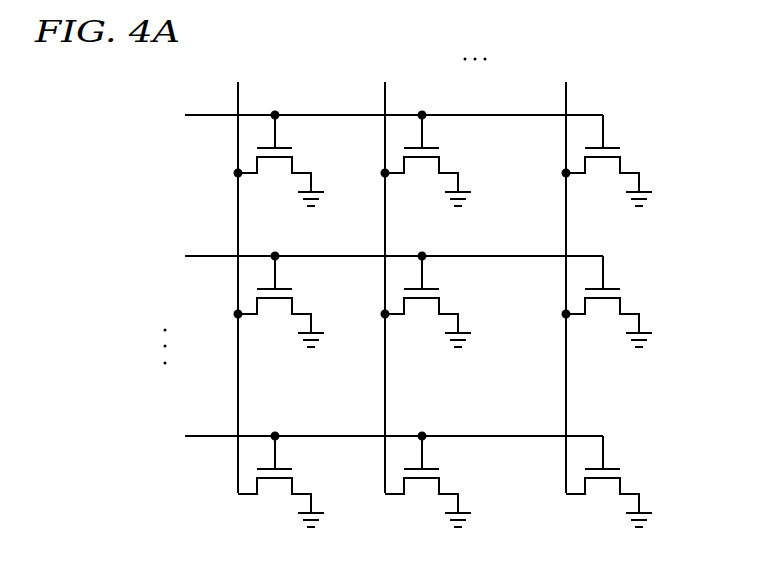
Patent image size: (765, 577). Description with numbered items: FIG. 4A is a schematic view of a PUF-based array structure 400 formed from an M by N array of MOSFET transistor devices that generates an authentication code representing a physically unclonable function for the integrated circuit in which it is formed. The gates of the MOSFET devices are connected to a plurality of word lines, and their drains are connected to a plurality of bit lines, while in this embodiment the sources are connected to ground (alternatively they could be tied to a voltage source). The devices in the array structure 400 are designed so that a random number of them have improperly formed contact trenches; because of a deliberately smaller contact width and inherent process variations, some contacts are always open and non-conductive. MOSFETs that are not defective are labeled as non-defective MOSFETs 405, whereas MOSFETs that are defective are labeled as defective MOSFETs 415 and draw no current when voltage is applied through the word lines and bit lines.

The PUF-based array structure 400 is at (123, 76).
The non-defective MOSFET 405 is at (310, 160).
The defective MOSFET 415 is at (457, 160).